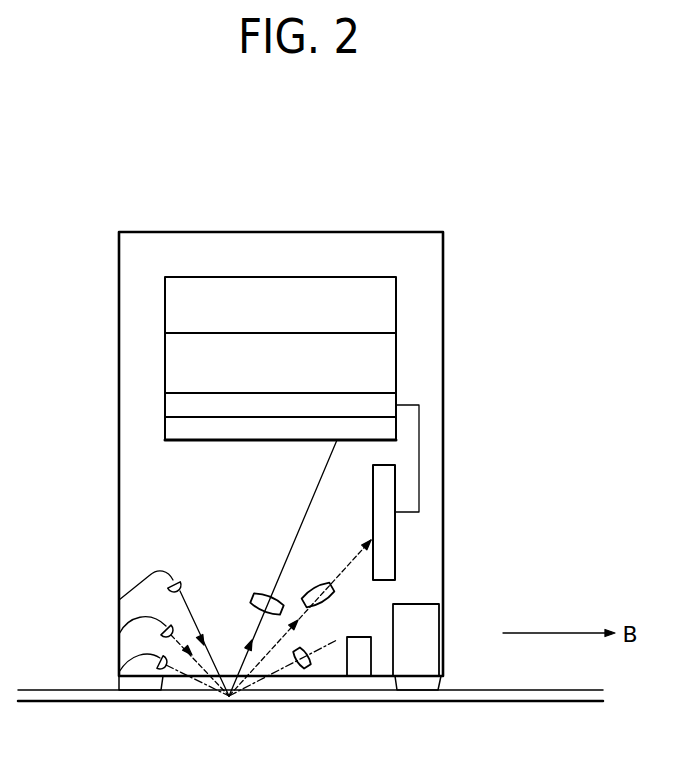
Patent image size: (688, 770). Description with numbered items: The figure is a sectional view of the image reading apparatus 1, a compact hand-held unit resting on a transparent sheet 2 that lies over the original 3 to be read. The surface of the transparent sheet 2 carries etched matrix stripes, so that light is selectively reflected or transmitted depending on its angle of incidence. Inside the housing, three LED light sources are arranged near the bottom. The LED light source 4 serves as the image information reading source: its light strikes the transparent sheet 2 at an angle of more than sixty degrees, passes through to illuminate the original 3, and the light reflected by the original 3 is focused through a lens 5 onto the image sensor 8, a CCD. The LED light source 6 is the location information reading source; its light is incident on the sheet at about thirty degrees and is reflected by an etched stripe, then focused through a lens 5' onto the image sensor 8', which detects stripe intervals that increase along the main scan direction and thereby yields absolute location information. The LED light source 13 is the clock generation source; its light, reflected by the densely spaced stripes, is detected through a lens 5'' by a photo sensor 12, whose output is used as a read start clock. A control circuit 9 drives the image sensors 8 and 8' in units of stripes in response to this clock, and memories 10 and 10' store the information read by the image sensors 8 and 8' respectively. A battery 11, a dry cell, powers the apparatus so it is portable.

The image reading apparatus 1 is at (436, 244).
The transparent sheet 2 is at (506, 690).
The original 3 is at (462, 703).
The LED light source 4 is at (174, 578).
The lens 5 is at (263, 578).
The lens 5' is at (318, 570).
The lens 5'' is at (319, 641).
The LED light source 6 is at (122, 628).
The image sensor 8 is at (264, 431).
The image sensor 8' is at (405, 492).
The control circuit 9 is at (170, 403).
The memory 10 is at (259, 363).
The memory 10' is at (258, 305).
The battery 11 is at (416, 606).
The photo sensor 12 is at (349, 636).
The LED light source 13 is at (120, 668).